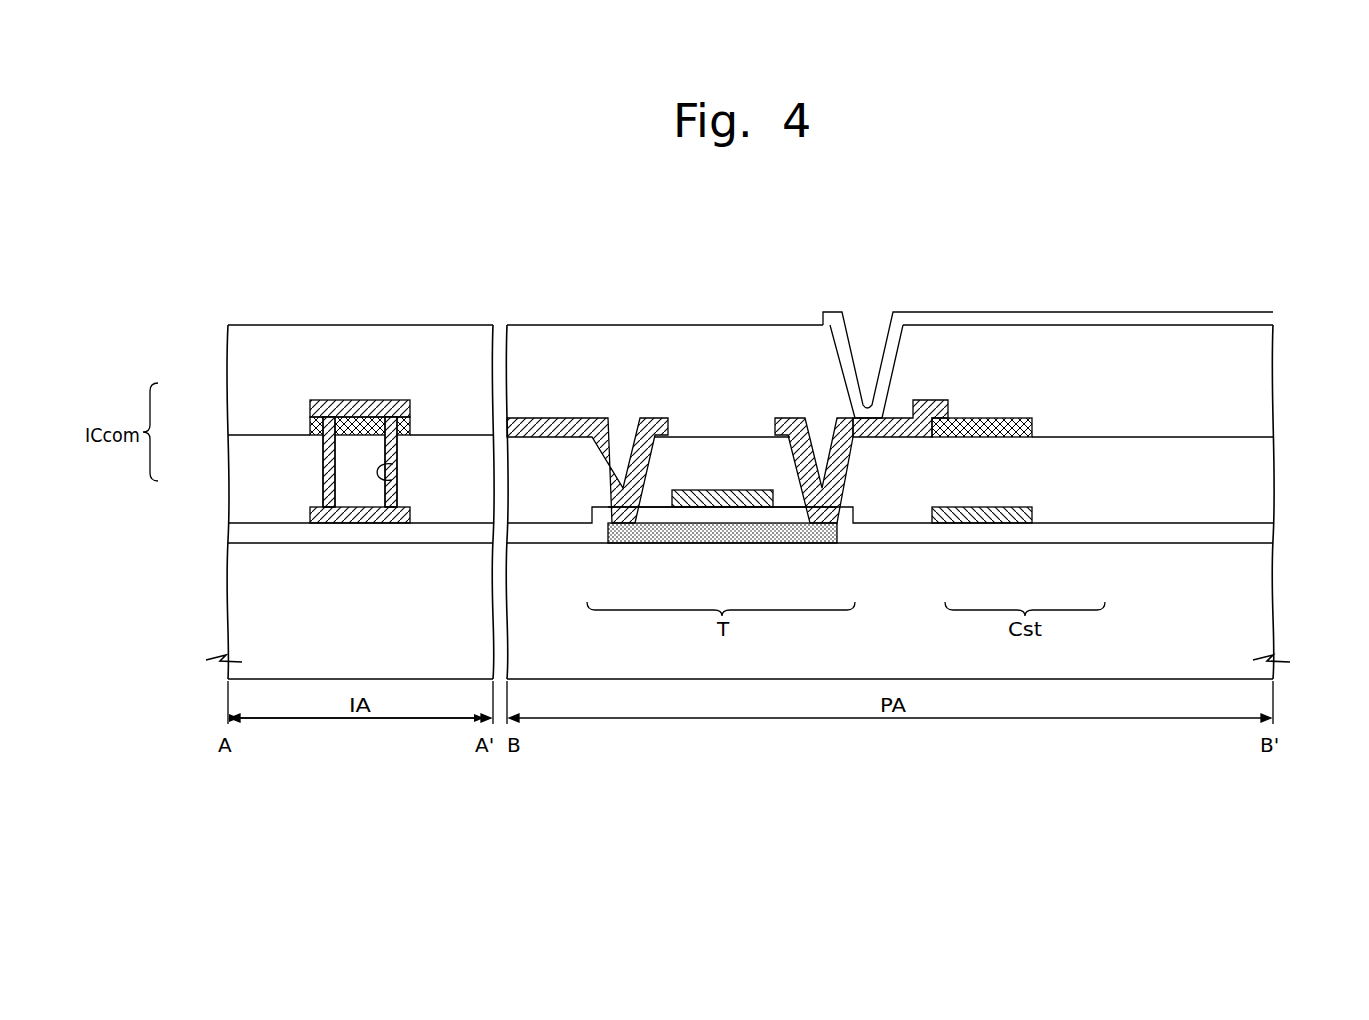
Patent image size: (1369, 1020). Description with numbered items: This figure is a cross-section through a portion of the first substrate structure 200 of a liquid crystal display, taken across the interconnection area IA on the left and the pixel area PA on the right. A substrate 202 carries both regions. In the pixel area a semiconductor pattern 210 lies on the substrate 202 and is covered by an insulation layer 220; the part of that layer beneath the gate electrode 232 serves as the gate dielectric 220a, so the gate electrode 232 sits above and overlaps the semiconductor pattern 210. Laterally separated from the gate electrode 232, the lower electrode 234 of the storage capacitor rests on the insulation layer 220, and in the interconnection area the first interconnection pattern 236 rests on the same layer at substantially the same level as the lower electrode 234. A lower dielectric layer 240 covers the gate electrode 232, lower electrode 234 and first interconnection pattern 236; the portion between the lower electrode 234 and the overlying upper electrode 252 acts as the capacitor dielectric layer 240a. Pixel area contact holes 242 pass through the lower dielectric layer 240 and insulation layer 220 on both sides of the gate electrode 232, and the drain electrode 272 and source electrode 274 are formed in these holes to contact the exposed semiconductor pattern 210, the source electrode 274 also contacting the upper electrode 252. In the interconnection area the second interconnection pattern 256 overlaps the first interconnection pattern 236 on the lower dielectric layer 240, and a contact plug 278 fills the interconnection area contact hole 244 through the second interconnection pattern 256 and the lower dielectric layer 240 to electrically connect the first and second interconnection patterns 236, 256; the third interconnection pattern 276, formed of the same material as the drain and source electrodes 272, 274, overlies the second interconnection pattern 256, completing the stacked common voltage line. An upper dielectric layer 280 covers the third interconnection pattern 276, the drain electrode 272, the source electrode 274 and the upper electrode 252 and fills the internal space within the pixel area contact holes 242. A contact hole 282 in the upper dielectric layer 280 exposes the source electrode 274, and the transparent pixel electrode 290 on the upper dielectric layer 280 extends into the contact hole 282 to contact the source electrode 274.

The first substrate structure 200 is at (1094, 268).
The substrate 202 is at (238, 594).
The semiconductor pattern 210 is at (668, 536).
The insulation layer 220 is at (238, 536).
The gate dielectric 220a is at (730, 509).
The gate electrode 232 is at (756, 508).
The lower electrode 234 is at (1032, 526).
The first interconnection pattern 236 is at (310, 517).
The lower dielectric layer 240 is at (238, 509).
The capacitor dielectric layer 240a is at (988, 496).
The pixel area contact holes 242 is at (836, 482).
The interconnection area contact hole 244 is at (393, 466).
The upper electrode 252 is at (957, 438).
The second interconnection pattern 256 is at (310, 428).
The drain electrode 272 is at (620, 526).
The source electrode 274 is at (822, 526).
The third interconnection pattern 276 is at (310, 408).
The contact plug 278 is at (323, 468).
The upper dielectric layer 280 is at (238, 366).
The contact hole 282 is at (890, 376).
The pixel electrode 290 is at (1268, 320).